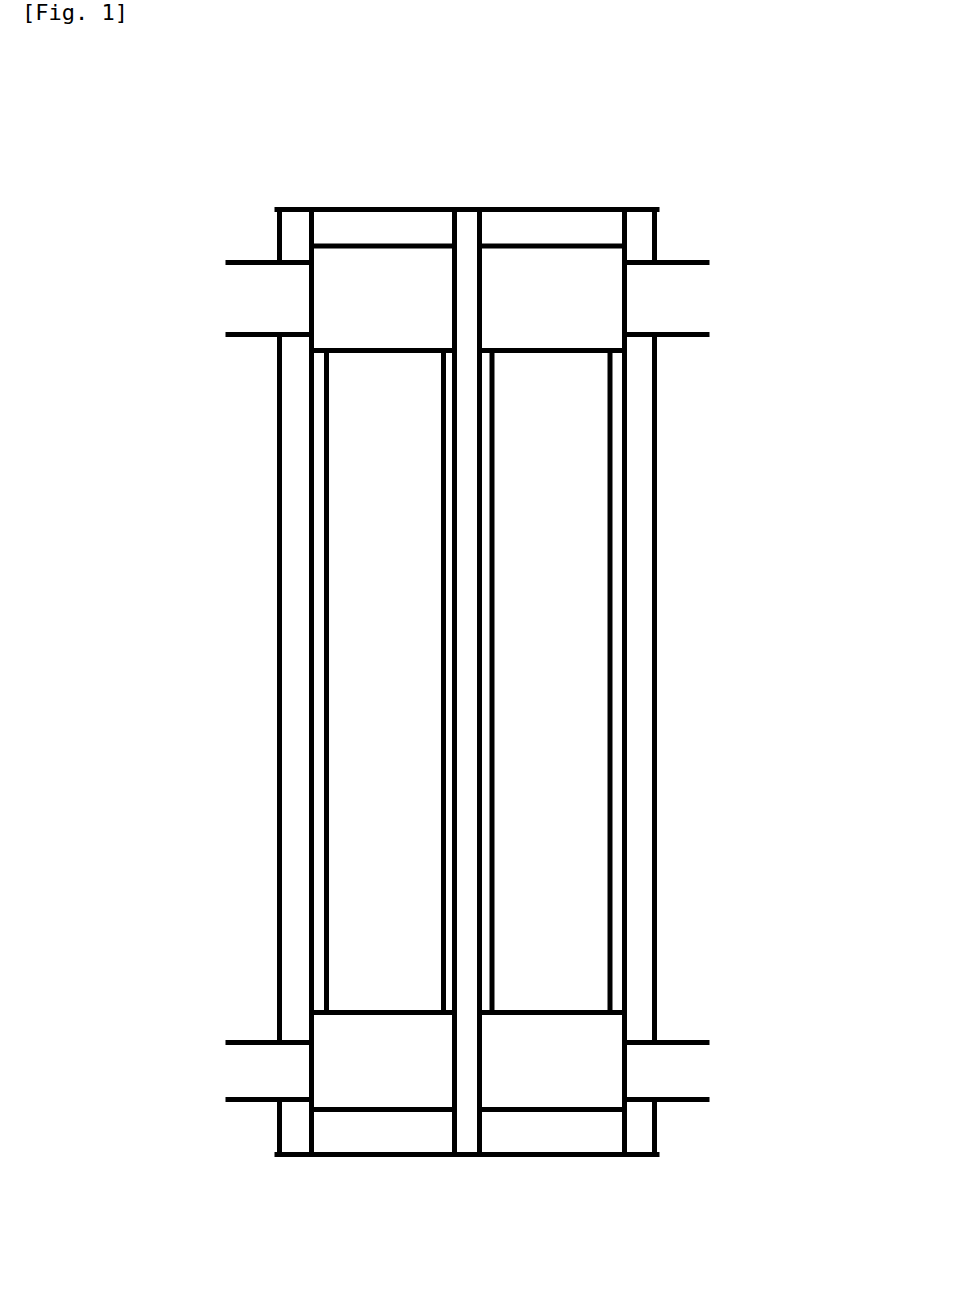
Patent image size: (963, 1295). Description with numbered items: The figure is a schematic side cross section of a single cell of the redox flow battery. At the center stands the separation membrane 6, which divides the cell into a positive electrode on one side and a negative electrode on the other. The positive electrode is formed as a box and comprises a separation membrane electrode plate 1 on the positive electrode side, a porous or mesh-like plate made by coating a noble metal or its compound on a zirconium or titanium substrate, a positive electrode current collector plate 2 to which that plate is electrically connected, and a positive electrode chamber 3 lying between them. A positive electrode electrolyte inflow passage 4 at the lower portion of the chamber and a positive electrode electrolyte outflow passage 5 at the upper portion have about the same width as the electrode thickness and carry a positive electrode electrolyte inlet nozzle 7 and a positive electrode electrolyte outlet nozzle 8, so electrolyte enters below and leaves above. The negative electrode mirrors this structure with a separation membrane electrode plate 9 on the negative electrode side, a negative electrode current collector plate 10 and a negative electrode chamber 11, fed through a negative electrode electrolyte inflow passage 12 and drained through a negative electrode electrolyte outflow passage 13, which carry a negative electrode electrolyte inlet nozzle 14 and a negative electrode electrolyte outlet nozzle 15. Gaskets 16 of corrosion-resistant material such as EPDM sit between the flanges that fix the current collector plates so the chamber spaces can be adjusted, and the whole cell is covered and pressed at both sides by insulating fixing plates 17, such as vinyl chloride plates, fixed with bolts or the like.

The separation membrane electrode plate on the positive electrode side 1 is at (483, 490).
The positive electrode current collector plate 2 is at (615, 803).
The positive electrode chamber 3 is at (557, 707).
The positive electrode electrolyte inflow passage 4 is at (557, 1043).
The positive electrode electrolyte outflow passage 5 is at (550, 308).
The separation membrane 6 is at (468, 222).
The positive electrode electrolyte inlet nozzle 7 is at (670, 1073).
The positive electrode electrolyte outlet nozzle 8 is at (673, 302).
The separation membrane electrode plate on the negative electrode side 9 is at (447, 544).
The negative electrode current collector plate 10 is at (318, 785).
The negative electrode chamber 11 is at (372, 665).
The negative electrode electrolyte inflow passage 12 is at (385, 1040).
The negative electrode electrolyte outflow passage 13 is at (375, 308).
The negative electrode electrolyte inlet nozzle 14 is at (252, 1072).
The negative electrode electrolyte outlet nozzle 15 is at (248, 298).
The gaskets 16 is at (348, 222).
The insulating fixing plates 17 is at (295, 878).